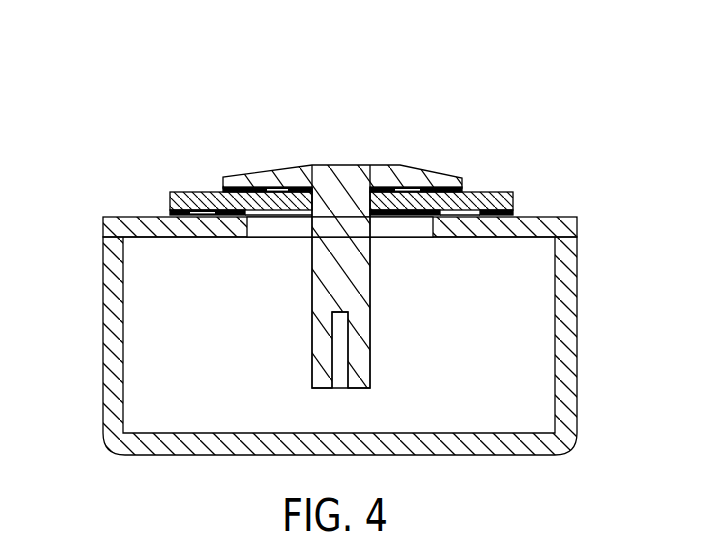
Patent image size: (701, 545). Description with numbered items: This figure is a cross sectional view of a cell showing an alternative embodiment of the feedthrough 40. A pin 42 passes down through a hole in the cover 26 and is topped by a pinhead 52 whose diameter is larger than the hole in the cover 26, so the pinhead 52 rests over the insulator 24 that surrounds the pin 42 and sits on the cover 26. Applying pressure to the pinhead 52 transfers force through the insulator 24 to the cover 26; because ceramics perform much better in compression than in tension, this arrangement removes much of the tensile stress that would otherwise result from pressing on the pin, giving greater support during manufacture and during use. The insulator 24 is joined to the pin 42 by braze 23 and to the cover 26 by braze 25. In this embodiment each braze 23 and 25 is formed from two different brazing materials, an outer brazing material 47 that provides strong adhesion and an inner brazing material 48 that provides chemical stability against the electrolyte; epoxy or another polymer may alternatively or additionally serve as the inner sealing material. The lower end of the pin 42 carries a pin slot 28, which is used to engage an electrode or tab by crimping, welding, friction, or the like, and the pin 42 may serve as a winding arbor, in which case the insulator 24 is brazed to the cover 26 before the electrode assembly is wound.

The feedthrough 40 is at (86, 118).
The braze 23 is at (472, 188).
The insulator 24 is at (490, 192).
The braze 25 is at (513, 216).
The cover 26 is at (557, 218).
The pin slot 28 is at (370, 357).
The pin 42 is at (370, 290).
The outer brazing material 47 is at (170, 213).
The inner brazing material 48 is at (217, 195).
The pinhead 52 is at (403, 165).